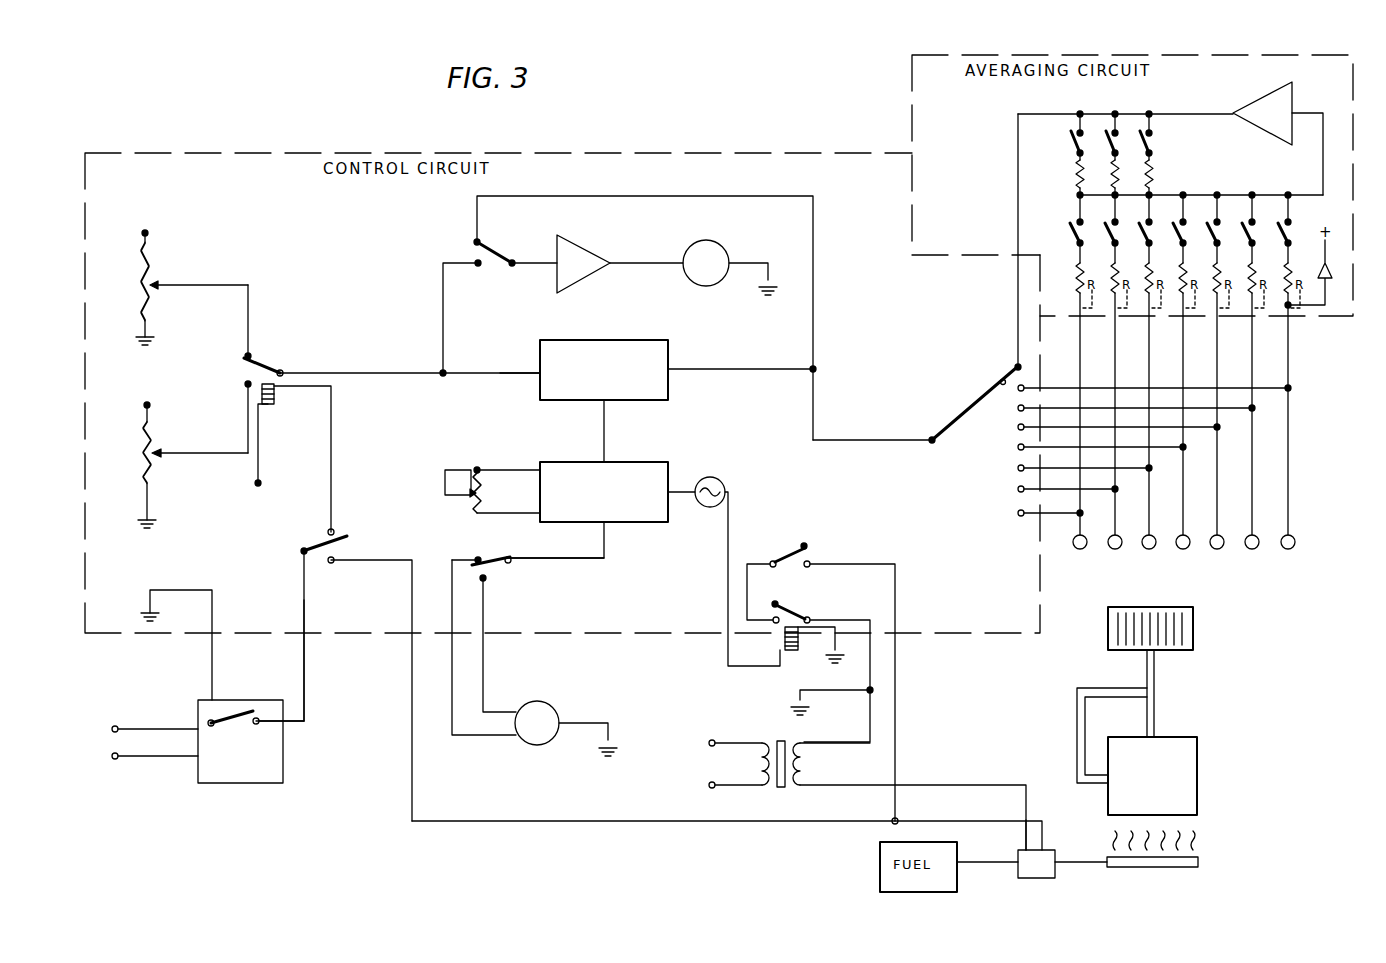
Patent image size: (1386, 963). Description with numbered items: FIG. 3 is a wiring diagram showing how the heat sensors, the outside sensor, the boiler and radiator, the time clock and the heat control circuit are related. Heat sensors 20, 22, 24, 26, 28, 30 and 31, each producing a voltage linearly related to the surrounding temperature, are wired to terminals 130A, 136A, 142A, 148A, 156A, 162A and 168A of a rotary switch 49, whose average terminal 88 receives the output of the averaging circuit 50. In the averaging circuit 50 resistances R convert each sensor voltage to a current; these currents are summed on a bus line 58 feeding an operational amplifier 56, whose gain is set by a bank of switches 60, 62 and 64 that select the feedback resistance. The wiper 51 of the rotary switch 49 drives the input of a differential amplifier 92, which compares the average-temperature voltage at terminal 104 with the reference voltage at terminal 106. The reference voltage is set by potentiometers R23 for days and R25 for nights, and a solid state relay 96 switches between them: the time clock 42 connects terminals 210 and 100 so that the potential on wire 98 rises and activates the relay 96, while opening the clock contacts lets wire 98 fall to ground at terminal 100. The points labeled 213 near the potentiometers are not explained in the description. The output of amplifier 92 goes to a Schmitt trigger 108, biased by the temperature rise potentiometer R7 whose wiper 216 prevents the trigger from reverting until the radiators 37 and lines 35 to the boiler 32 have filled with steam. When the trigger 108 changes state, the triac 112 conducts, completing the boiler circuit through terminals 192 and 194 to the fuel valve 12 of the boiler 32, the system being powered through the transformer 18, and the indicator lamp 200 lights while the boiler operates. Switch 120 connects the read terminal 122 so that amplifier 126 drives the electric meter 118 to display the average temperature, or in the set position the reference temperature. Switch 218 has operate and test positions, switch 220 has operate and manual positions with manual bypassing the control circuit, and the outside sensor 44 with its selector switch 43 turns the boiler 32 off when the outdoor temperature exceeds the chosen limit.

The solenoid actuated fuel valve 12 is at (1037, 880).
The transformer 18 is at (792, 790).
The heat sensor 20 is at (1078, 550).
The heat sensor 22 is at (1113, 550).
The heat sensor 24 is at (1148, 550).
The heat sensor 26 is at (1183, 550).
The heat sensor 28 is at (1217, 550).
The heat sensor 30 is at (1252, 550).
The heat sensor 31 is at (1289, 550).
The boiler 32 is at (1152, 776).
The lines 35 is at (1157, 703).
The radiator 37 is at (1183, 635).
The time clock 42 is at (190, 758).
The switch 43 is at (498, 568).
The outside heat sensor 44 is at (563, 753).
The rotary switch 49 is at (942, 409).
The averaging circuit 50 is at (1338, 108).
The wiper 51 is at (973, 403).
The operational amplifier 56 is at (1281, 126).
The bus line 58 is at (1303, 195).
The switch 60 is at (1072, 145).
The switch 62 is at (1118, 137).
The switch 64 is at (1152, 143).
The average terminal 88 is at (1016, 365).
The differential amplifier 92 is at (614, 392).
The solid state relay 96 is at (270, 405).
The wire 98 is at (308, 689).
The terminal 100 is at (260, 726).
The terminal 104 is at (680, 367).
The terminal 106 is at (537, 378).
The Schmitt trigger 108 is at (648, 461).
The triac 112 is at (790, 618).
The electric meter 118 is at (706, 240).
The switch 120 is at (508, 255).
The read terminal 122 is at (466, 236).
The amplifier 126 is at (573, 250).
The terminal 130A is at (1018, 496).
The terminal 136A is at (1018, 475).
The terminal 142A is at (1018, 454).
The terminal 148A is at (1018, 434).
The terminal 156A is at (1018, 415).
The terminal 162A is at (1018, 396).
The terminal 168A is at (1000, 380).
The terminal 192 is at (1024, 848).
The terminal 194 is at (1045, 849).
The L.E.D. indicator lamp 200 is at (710, 478).
The terminal 210 is at (208, 721).
The voltage supply terminal 213 is at (266, 483).
The wiper 216 is at (457, 500).
The switch 218 is at (771, 561).
The switch 220 is at (334, 538).
The potentiometer R7 is at (492, 490).
The potentiometer R23 is at (193, 465).
The potentiometer R25 is at (192, 287).